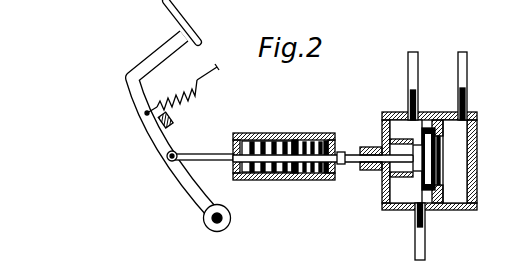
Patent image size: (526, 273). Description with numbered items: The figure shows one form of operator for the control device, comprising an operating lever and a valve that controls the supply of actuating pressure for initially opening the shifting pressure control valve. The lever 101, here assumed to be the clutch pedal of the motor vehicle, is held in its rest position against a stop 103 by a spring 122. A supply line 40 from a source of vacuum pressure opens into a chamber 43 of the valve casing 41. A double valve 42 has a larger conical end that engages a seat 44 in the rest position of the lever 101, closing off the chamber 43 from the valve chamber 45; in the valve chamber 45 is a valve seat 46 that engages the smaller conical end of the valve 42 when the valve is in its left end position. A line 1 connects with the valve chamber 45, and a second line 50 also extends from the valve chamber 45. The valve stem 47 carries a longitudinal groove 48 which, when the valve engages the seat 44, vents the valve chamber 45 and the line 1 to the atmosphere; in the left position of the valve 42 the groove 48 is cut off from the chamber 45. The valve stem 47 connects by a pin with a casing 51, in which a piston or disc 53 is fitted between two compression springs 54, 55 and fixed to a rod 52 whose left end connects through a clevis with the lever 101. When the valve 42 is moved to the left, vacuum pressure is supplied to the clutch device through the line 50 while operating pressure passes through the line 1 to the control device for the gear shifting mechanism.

The line 1 is at (419, 246).
The supply line 40 is at (463, 78).
The valve casing 41 is at (477, 158).
The double valve 42 is at (428, 161).
The chamber 43 is at (457, 177).
The seat 44 is at (445, 208).
The valve chamber 45 is at (403, 192).
The valve seat 46 is at (412, 130).
The valve stem 47 is at (378, 171).
The longitudinal groove 48 is at (362, 152).
The second line 50 is at (412, 63).
The casing 51 is at (257, 138).
The rod 52 is at (186, 154).
The disc 53 is at (294, 179).
The compression spring 54 is at (278, 148).
The compression spring 55 is at (314, 175).
The operating lever 101 is at (158, 52).
The stop 103 is at (160, 123).
The spring 122 is at (195, 80).